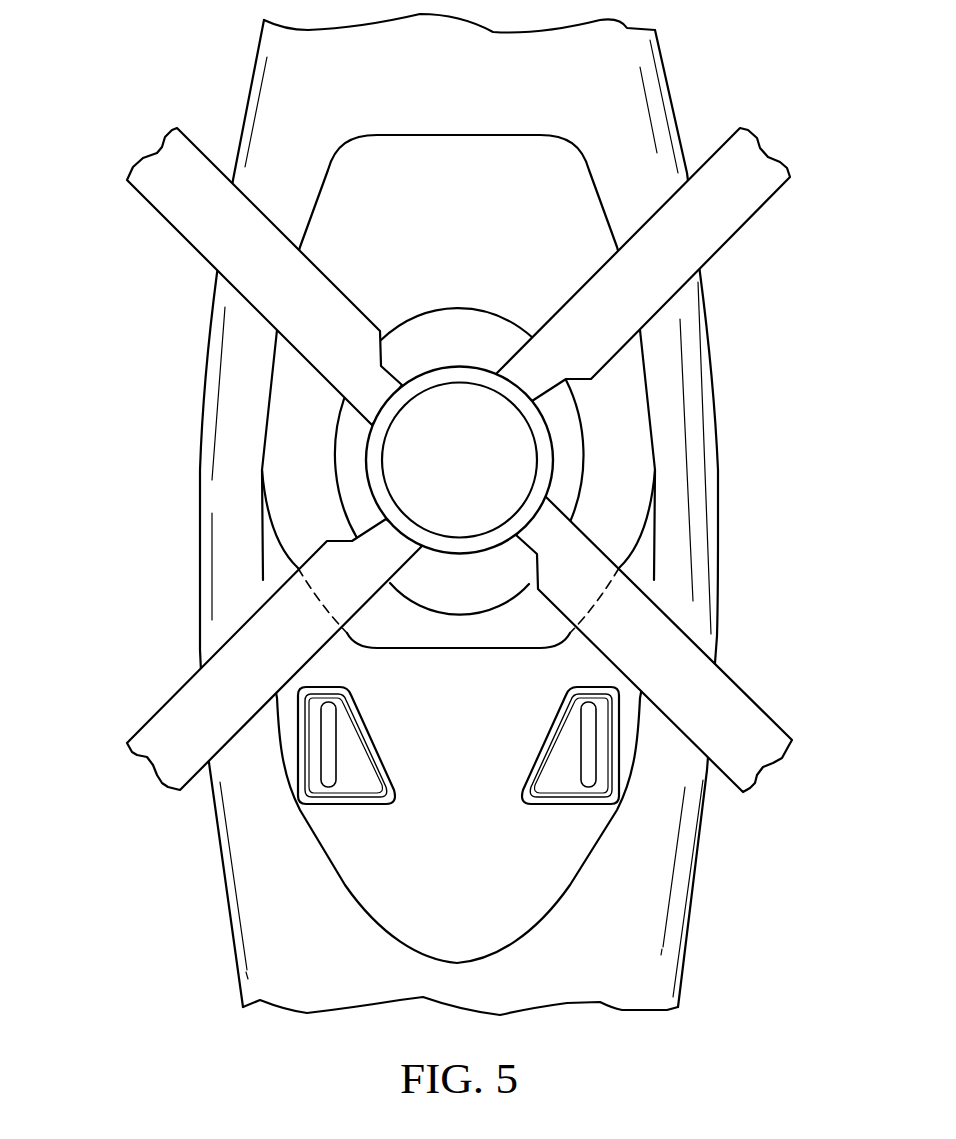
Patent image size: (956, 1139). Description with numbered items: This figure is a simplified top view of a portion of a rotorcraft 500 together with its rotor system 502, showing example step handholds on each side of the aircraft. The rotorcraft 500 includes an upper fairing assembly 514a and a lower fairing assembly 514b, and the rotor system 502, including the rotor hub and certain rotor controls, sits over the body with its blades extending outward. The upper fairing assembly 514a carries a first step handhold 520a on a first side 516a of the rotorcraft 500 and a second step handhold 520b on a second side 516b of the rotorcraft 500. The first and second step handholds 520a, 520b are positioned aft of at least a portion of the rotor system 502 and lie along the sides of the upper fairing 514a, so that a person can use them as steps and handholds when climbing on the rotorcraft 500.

The rotorcraft 500 is at (434, 514).
The rotor system 502 is at (452, 352).
The upper fairing assembly 514a is at (322, 845).
The lower fairing assembly 514b is at (215, 499).
The first side 516a is at (198, 561).
The second side 516b is at (717, 538).
The first step handhold 520a is at (407, 717).
The second step handhold 520b is at (497, 750).